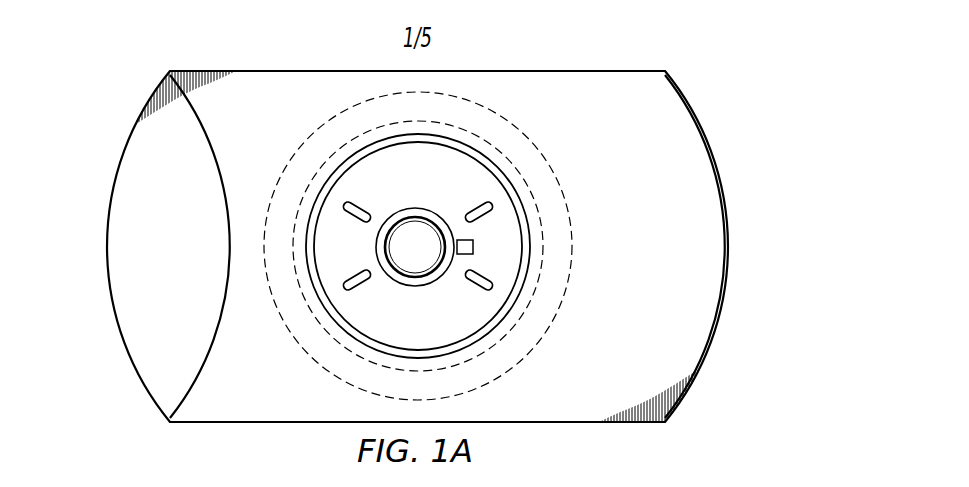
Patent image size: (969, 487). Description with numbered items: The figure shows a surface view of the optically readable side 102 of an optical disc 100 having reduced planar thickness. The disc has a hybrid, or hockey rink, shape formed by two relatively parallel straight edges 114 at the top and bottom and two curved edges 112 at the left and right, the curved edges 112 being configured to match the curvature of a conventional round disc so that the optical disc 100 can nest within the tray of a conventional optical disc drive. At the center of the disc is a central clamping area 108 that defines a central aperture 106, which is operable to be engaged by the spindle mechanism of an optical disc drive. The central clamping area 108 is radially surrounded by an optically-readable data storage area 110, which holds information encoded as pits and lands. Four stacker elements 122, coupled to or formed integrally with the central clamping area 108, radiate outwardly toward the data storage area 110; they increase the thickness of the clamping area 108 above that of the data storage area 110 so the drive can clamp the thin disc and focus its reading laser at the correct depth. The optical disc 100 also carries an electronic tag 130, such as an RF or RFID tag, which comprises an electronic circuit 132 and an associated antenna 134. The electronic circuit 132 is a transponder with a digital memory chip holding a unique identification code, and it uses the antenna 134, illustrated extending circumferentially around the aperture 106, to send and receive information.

The optical disc 100 is at (385, 223).
The optically readable side 102 is at (282, 79).
The central aperture 106 is at (385, 215).
The central clamping area 108 is at (330, 221).
The optically-readable data storage area 110 is at (573, 248).
The curved edges 112 is at (107, 247).
The straight edges 114 is at (572, 71).
The stacker elements 122 is at (357, 207).
The electronic tag 130 is at (412, 200).
The electronic circuit 132 is at (497, 250).
The antenna 134 is at (432, 257).